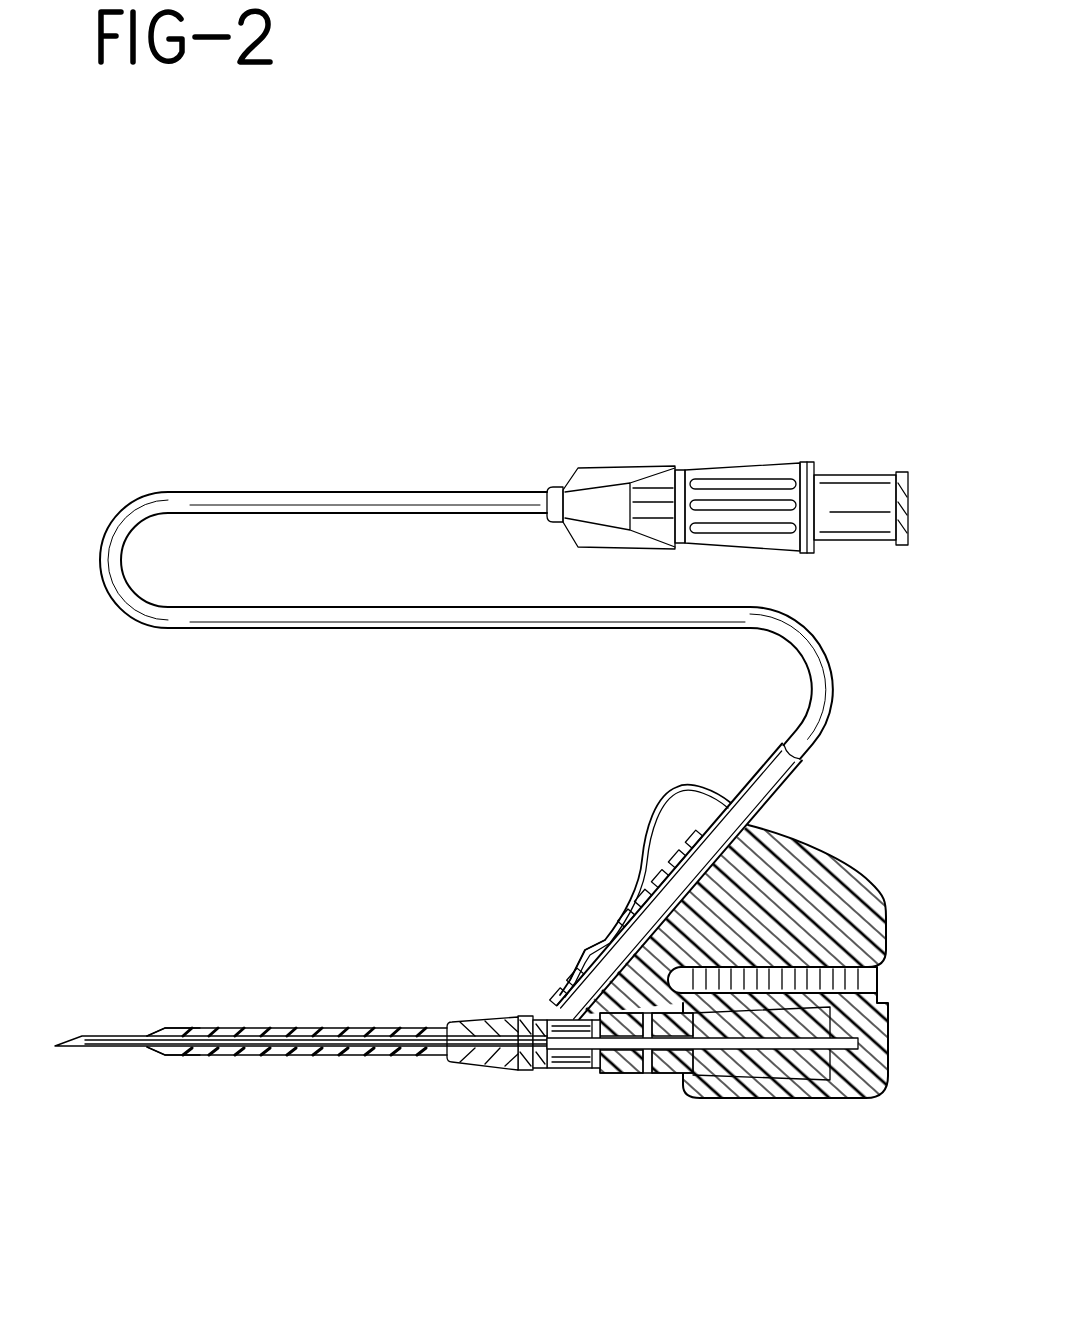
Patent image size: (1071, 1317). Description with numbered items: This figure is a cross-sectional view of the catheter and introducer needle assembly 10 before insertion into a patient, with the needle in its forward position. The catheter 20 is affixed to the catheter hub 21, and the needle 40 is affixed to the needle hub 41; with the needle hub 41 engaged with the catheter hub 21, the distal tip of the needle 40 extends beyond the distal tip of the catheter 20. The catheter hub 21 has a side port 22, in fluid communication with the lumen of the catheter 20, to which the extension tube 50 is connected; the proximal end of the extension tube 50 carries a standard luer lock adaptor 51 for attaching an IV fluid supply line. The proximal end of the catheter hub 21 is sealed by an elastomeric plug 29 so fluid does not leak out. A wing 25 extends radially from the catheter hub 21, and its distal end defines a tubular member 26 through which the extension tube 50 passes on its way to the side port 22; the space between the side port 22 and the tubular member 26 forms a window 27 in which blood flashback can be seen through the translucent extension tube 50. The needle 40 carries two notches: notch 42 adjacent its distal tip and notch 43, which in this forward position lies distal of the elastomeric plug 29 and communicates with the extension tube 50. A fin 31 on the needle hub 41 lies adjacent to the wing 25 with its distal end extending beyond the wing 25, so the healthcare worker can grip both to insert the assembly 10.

The catheter and introducer needle assembly 10 is at (215, 795).
The catheter 20 is at (313, 1027).
The catheter hub 21 is at (534, 1072).
The side port 22 is at (560, 1012).
The wing 25 is at (878, 880).
The tubular member 26 is at (660, 877).
The window 27 is at (600, 940).
The elastomeric plug 29 is at (613, 1074).
The fin 31 is at (673, 783).
The needle 40 is at (100, 1049).
The needle hub 41 is at (758, 1098).
The notch 42 is at (224, 1038).
The notch 43 is at (517, 1018).
The extension tube 50 is at (340, 630).
The luer lock adaptor 51 is at (902, 470).